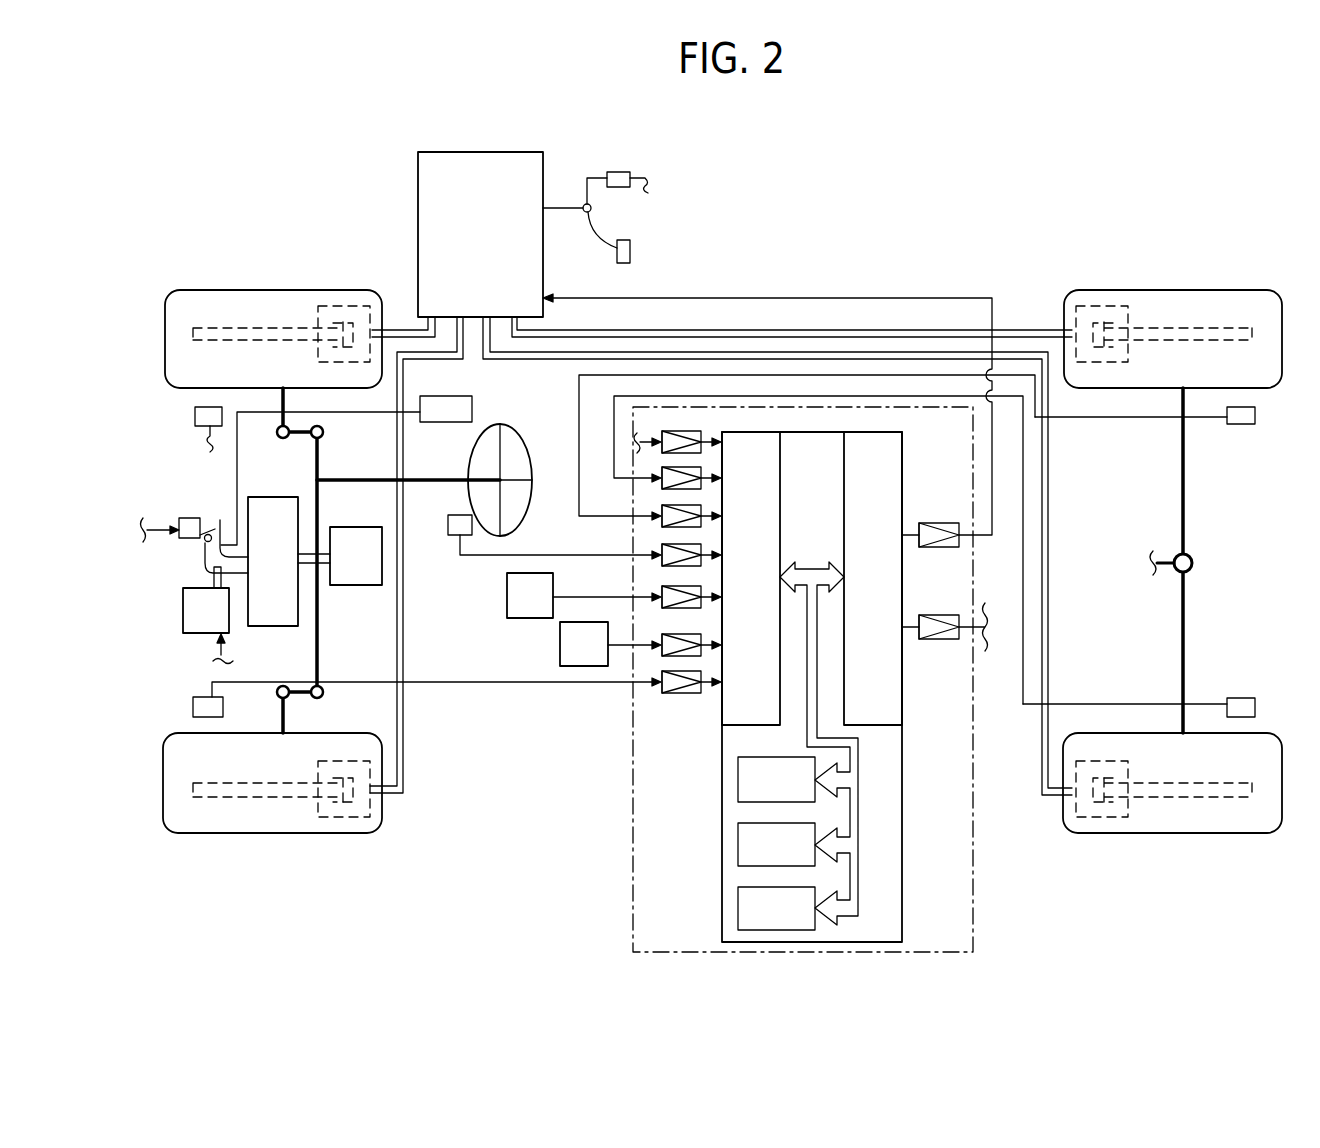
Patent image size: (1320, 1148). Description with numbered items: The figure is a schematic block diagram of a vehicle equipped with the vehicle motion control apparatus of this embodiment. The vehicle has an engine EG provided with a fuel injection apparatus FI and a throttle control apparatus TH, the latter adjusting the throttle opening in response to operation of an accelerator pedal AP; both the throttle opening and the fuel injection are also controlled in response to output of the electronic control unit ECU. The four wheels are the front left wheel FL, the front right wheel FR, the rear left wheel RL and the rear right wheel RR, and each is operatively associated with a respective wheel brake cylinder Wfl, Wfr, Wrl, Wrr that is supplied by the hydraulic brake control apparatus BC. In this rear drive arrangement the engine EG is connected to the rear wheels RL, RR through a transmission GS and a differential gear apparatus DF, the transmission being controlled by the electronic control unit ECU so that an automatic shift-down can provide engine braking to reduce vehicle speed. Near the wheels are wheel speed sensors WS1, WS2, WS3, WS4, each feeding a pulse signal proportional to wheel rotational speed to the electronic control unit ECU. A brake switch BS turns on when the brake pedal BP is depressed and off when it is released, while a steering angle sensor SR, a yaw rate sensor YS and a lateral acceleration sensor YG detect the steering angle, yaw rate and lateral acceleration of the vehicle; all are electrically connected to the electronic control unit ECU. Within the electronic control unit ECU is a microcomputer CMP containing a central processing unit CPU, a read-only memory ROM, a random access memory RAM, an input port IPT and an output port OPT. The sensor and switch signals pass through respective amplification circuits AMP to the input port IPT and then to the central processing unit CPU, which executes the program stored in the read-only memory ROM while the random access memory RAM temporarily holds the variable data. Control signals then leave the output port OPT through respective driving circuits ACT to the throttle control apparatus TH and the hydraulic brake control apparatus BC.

The hydraulic brake control apparatus BC is at (418, 198).
The brake switch BS is at (622, 172).
The brake pedal BP is at (605, 235).
The wheel FR is at (200, 290).
The wheel FL is at (200, 835).
The wheel RR is at (1192, 290).
The wheel RL is at (1198, 835).
The wheel brake cylinder Wfr is at (348, 292).
The wheel brake cylinder Wfl is at (358, 838).
The wheel brake cylinder Wrr is at (1083, 296).
The wheel brake cylinder Wrl is at (1085, 822).
The wheel speed sensor WS1 is at (196, 710).
The wheel speed sensor WS2 is at (195, 416).
The wheel speed sensor WS3 is at (1243, 704).
The wheel speed sensor WS4 is at (1242, 424).
The accelerator pedal AP is at (472, 407).
The throttle control apparatus TH is at (180, 517).
The engine EG is at (286, 512).
The transmission GS is at (356, 556).
The fuel injection apparatus FI is at (208, 615).
The steering angle sensor SR is at (453, 527).
The yaw rate sensor YS is at (584, 595).
The lateral acceleration sensor YG is at (610, 644).
The electronic control unit ECU is at (632, 836).
The amplification circuit AMP is at (670, 694).
The microcomputer CMP is at (903, 862).
The input port IPT is at (769, 476).
The output port OPT is at (895, 476).
The central processing unit CPU is at (776, 779).
The read-only memory ROM is at (776, 844).
The random access memory RAM is at (776, 908).
The driving circuit ACT is at (932, 523).
The differential gear apparatus DF is at (1194, 556).